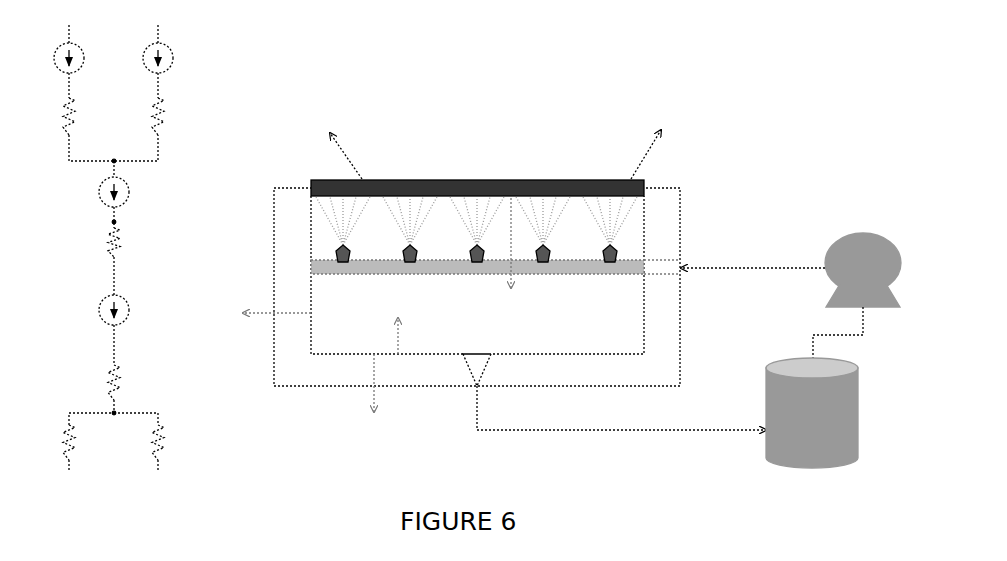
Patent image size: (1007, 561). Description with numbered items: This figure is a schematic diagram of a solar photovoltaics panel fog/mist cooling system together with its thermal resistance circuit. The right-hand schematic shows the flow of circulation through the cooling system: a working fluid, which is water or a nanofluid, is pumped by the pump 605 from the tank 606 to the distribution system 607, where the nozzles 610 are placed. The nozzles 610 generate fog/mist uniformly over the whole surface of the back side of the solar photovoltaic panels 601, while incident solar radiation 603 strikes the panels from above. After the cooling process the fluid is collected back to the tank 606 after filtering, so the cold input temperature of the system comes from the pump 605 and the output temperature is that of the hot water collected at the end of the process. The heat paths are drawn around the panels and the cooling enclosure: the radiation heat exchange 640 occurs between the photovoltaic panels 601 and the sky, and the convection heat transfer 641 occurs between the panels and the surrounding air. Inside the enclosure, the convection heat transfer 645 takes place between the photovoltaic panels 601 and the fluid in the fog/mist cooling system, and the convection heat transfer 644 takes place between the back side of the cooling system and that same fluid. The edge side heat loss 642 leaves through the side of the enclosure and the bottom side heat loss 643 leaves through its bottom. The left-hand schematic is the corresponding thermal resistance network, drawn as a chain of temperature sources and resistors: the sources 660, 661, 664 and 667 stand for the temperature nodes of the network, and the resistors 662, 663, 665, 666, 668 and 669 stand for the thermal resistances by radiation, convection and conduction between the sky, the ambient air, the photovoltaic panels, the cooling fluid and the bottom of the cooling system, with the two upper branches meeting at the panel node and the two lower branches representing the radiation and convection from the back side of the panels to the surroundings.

The solar photovoltaic panels 601 is at (540, 177).
The incident solar radiation 603 is at (483, 178).
The pump 605 is at (791, 299).
The tank 606 is at (812, 413).
The distribution system 607 is at (575, 277).
The nozzles 610 is at (338, 246).
The radiation heat exchange 640 is at (339, 140).
The convection heat transfer 641 is at (671, 140).
The edge side heat loss 642 is at (267, 292).
The bottom side heat loss 643 is at (402, 388).
The convection heat transfer 644 is at (400, 319).
The convection heat transfer 645 is at (512, 257).
The current source 660 is at (76, 58).
The current source 661 is at (165, 58).
The resistor 662 is at (78, 116).
The resistor 663 is at (167, 116).
The current source 664 is at (122, 192).
The resistor 665 is at (123, 242).
The resistor 666 is at (123, 382).
The current source 667 is at (121, 310).
The resistor 668 is at (78, 442).
The resistor 669 is at (167, 442).